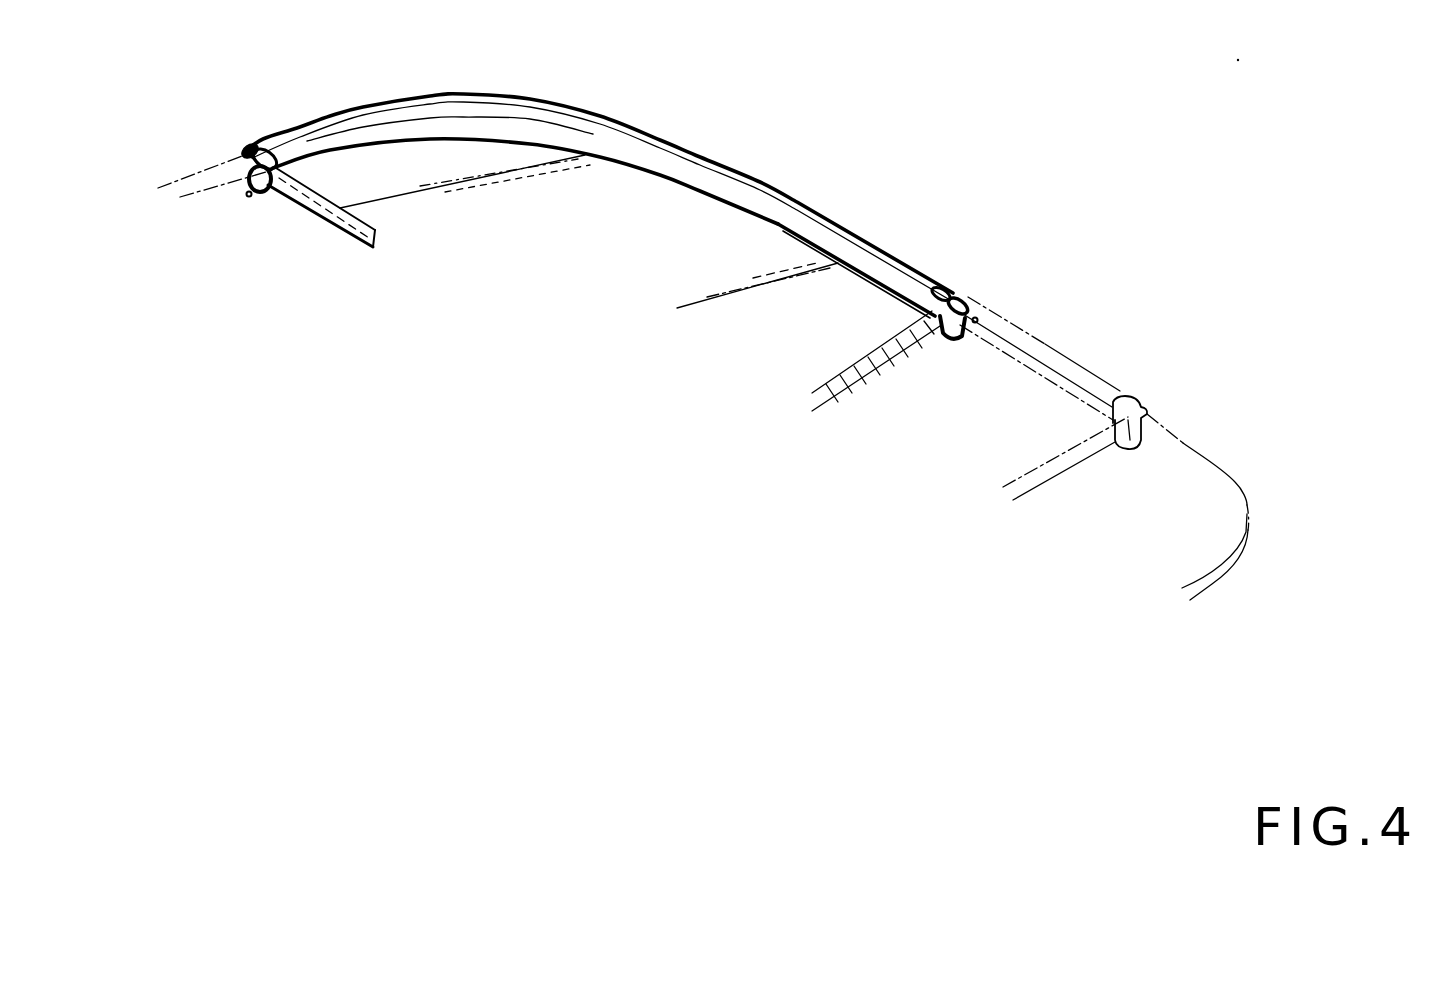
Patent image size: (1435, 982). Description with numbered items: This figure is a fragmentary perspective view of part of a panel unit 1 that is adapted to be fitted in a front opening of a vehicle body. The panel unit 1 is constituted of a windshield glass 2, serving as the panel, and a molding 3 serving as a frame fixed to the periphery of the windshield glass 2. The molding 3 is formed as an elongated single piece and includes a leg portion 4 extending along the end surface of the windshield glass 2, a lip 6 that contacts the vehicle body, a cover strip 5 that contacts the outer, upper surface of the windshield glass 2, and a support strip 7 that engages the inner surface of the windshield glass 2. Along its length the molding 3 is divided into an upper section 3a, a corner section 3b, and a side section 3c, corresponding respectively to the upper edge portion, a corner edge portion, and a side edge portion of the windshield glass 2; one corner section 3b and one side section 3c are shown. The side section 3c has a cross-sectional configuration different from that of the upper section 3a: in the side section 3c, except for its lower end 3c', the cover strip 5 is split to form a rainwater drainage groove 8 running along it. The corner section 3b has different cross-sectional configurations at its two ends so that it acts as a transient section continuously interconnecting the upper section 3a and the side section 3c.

The panel unit 1 is at (716, 142).
The windshield glass 2 is at (853, 388).
The molding 3 is at (754, 172).
The upper section 3a is at (248, 147).
The corner section 3b is at (553, 103).
The side section 3c is at (875, 246).
The lower end of side section 3c' is at (1104, 448).
The leg portion 4 is at (248, 196).
The cover strip 5 is at (320, 145).
The lip 6 is at (247, 150).
The support strip 7 is at (263, 197).
The rainwater drainage groove 8 is at (920, 302).